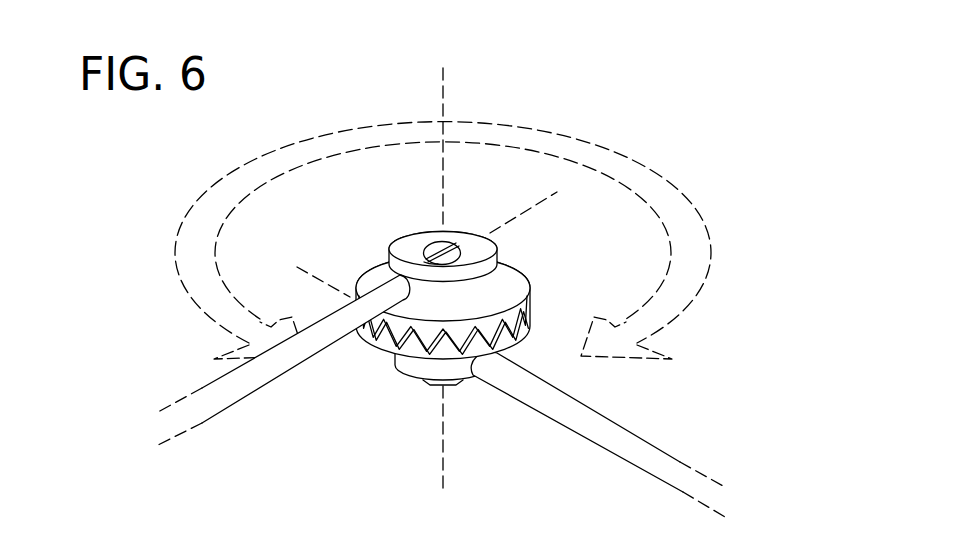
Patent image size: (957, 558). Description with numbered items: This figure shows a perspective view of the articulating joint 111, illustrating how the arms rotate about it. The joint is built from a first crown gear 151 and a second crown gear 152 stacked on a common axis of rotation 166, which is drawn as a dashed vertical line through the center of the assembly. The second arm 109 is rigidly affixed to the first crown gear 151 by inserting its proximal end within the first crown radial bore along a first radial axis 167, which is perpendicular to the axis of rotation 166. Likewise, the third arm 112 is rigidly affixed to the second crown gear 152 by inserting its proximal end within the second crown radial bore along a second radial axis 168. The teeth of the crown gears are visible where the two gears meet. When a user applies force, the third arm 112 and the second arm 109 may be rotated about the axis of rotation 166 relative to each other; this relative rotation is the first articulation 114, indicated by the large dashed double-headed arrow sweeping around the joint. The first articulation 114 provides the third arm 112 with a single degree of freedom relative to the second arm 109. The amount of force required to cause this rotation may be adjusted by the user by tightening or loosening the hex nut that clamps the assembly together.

The first articulating joint 111 is at (567, 88).
The first articulation 114 is at (177, 247).
The axis of rotation 166 is at (445, 457).
The first radial axis 167 is at (557, 192).
The second radial axis 168 is at (297, 267).
The first crown gear 151 is at (530, 278).
The second crown gear 152 is at (527, 337).
The second arm 109 is at (250, 390).
The third arm 112 is at (660, 450).